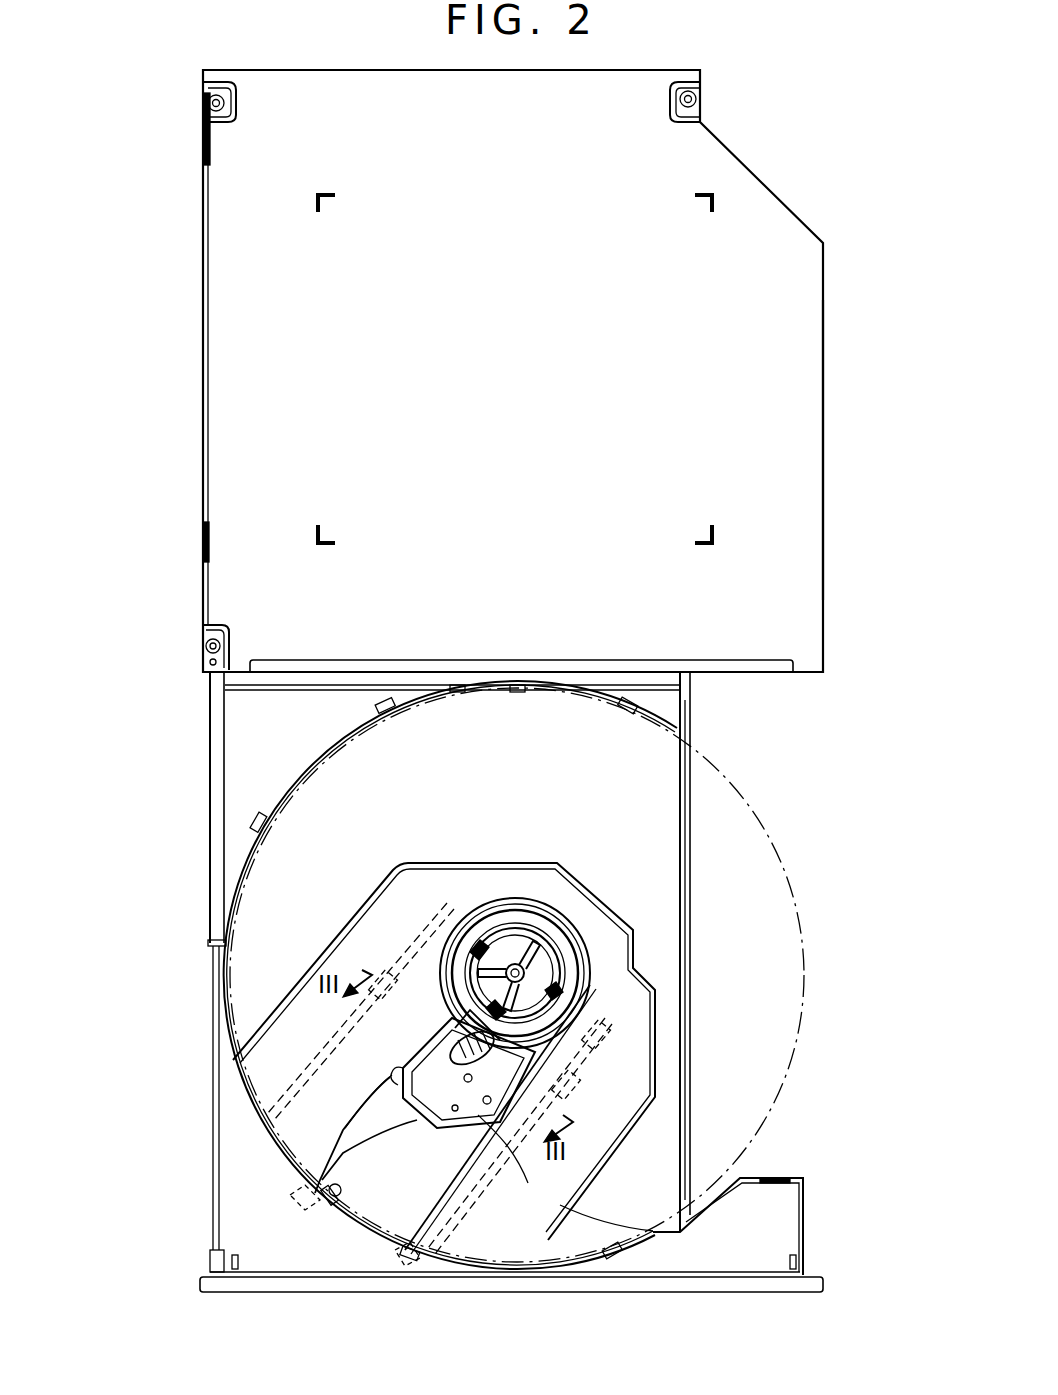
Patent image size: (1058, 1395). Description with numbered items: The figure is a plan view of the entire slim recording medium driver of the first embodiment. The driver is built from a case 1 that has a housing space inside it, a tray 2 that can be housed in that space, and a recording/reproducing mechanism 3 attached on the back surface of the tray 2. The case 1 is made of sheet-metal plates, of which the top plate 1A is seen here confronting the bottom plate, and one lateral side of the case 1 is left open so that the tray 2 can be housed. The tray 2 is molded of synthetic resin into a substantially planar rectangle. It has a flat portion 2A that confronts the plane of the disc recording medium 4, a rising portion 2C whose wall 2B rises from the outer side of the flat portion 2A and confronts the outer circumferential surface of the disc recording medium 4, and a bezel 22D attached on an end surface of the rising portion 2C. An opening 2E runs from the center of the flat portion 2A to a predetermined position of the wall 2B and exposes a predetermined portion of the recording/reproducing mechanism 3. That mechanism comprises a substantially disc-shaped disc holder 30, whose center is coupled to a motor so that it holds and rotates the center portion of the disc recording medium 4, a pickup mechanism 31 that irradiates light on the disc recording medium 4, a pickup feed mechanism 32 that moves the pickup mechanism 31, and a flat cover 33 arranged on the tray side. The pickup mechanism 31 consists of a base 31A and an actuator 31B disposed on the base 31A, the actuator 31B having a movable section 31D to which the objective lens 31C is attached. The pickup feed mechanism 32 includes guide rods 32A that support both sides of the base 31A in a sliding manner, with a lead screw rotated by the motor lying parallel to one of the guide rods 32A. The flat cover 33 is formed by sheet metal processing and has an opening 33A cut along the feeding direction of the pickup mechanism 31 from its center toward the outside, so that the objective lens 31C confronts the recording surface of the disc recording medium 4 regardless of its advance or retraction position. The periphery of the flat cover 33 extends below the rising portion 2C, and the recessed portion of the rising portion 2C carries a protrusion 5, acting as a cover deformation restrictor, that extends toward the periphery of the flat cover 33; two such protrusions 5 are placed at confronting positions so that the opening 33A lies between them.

The case 1 is at (856, 348).
The top plate 1A is at (825, 442).
The tray 2 is at (172, 850).
The flat portion 2A is at (688, 860).
The wall 2B is at (302, 792).
The rising portion 2C is at (348, 700).
The opening 2E is at (562, 1210).
The bezel 22D is at (588, 1294).
The recording/reproducing mechanism 3 is at (474, 888).
The disc holder 30 is at (537, 915).
The pickup mechanism 31 is at (450, 1140).
The base 31A is at (531, 1155).
The actuator 31B is at (385, 1080).
The objective lens 31C is at (445, 1045).
The movable section 31D is at (466, 1020).
The pickup feed mechanism 32 is at (563, 1080).
The guide rods 32A is at (298, 1080).
The flat cover 33 is at (455, 1230).
The opening 33A is at (470, 1178).
The disc recording medium 4 is at (748, 795).
The protrusion 5 is at (290, 1195).